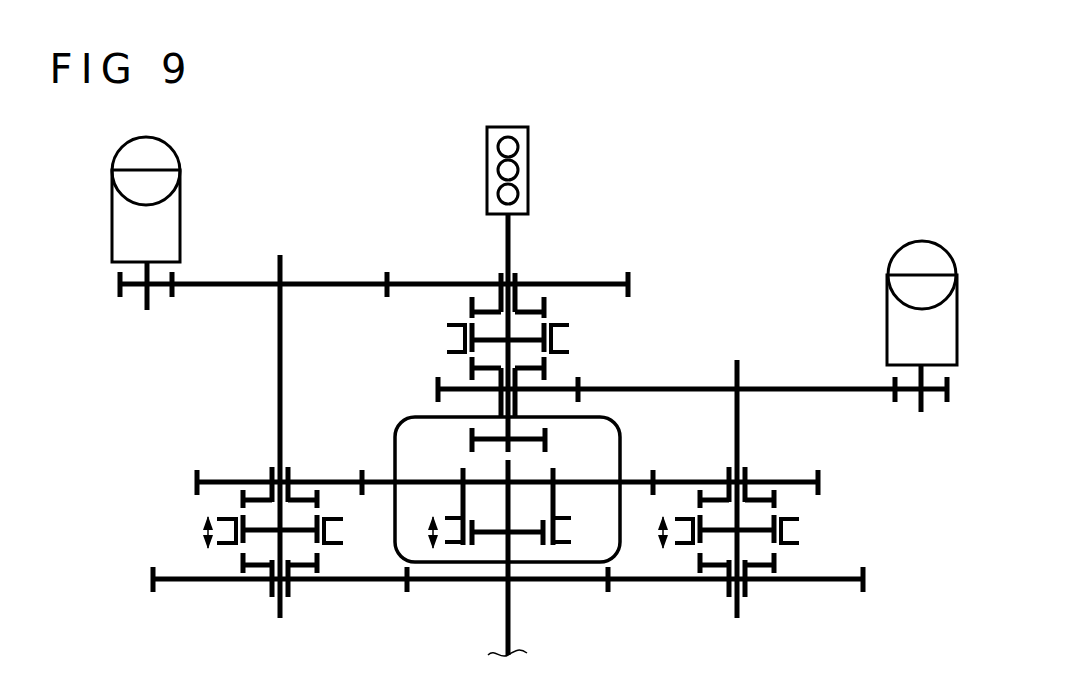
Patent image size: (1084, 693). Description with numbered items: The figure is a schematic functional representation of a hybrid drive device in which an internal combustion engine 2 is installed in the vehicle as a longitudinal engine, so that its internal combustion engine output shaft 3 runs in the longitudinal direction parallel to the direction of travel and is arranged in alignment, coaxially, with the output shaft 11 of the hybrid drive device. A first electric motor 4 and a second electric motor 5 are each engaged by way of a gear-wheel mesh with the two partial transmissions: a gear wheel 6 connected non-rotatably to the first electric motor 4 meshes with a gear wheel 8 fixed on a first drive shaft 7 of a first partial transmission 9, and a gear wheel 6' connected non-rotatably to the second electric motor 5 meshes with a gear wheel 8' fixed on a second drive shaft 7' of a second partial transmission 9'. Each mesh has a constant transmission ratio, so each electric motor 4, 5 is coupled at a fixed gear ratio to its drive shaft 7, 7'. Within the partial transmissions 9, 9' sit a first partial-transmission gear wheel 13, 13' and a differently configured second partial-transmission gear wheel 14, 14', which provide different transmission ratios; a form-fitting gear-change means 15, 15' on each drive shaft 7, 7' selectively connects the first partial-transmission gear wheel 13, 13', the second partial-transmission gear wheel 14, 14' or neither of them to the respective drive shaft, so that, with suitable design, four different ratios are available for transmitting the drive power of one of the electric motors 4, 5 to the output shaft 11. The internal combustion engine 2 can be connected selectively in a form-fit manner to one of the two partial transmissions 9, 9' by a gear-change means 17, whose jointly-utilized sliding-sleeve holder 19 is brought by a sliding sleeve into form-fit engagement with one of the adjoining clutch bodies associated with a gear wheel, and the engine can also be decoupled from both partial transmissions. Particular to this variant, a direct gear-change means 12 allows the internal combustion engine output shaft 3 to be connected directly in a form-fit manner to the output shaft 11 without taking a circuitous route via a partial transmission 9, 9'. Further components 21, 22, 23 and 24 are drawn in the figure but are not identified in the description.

The internal combustion engine 2 is at (528, 164).
The internal combustion engine output shaft 3 is at (506, 248).
The first electric motor 4 is at (887, 322).
The second electric motor 5 is at (112, 218).
The gear wheel 6 is at (925, 422).
The gear wheel 6' is at (109, 302).
The first drive shaft 7 is at (725, 457).
The second drive shaft 7' is at (292, 402).
The gear wheel 8 is at (692, 361).
The gear wheel 8' is at (374, 256).
The first partial transmission 9 is at (776, 620).
The second partial transmission 9' is at (248, 622).
The output shaft 11 is at (510, 636).
The direct gear-change means 12 is at (480, 561).
The first partial-transmission gear wheel 13 is at (759, 465).
The first partial-transmission gear wheel 13' is at (252, 470).
The second partial-transmission gear wheel 14 is at (759, 559).
The second partial-transmission gear wheel 14' is at (262, 611).
The form-fitting gear-change means 15 is at (777, 520).
The form-fitting gear-change means 15' is at (205, 520).
The gear-change means 17 is at (576, 340).
The jointly-utilized sliding-sleeve holder 19 is at (527, 333).
The gear 21 is at (552, 498).
The shifting element 22 is at (527, 534).
The planetary gear set 23 is at (397, 517).
The planetary gear set 24 is at (562, 471).